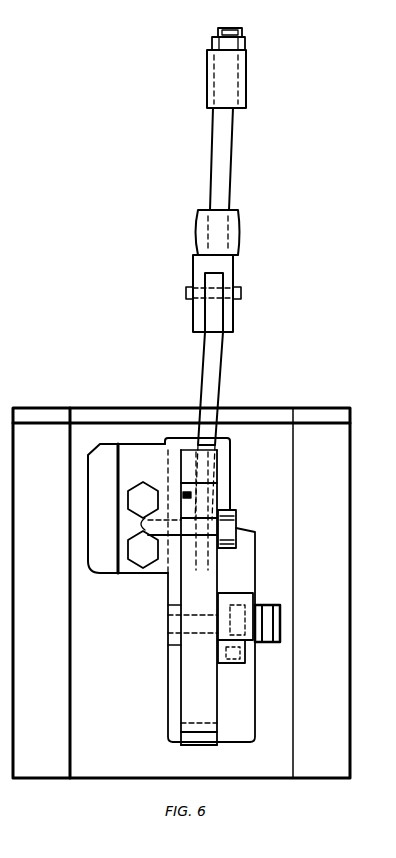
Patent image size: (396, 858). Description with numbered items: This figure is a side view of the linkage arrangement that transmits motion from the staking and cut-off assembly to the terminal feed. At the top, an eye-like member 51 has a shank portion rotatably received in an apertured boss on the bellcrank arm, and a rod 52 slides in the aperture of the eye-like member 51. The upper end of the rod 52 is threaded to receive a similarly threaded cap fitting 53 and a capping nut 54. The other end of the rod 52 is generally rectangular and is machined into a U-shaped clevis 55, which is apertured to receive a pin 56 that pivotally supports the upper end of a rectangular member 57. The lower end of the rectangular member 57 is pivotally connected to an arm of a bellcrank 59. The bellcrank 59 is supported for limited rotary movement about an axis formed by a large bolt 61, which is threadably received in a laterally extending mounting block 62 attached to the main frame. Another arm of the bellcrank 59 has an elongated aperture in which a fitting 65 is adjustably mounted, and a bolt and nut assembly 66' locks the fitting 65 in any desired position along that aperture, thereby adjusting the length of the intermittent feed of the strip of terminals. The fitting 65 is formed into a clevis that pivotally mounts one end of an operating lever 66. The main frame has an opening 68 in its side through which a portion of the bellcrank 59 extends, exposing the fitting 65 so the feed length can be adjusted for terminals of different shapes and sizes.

The eye-like member 51 is at (232, 239).
The rod 52 is at (218, 172).
The cap fitting 53 is at (240, 88).
The capping nut 54 is at (243, 46).
The U-shaped clevis 55 is at (228, 283).
The pin 56 is at (241, 293).
The rectangular member 57 is at (212, 387).
The bellcrank 59 is at (205, 605).
The large bolt 61 is at (240, 530).
The mounting block 62 is at (128, 463).
The fitting 65 is at (253, 600).
The operating lever 66 is at (270, 651).
The bolt and nut assembly 66' is at (290, 623).
The opening 68 is at (235, 728).